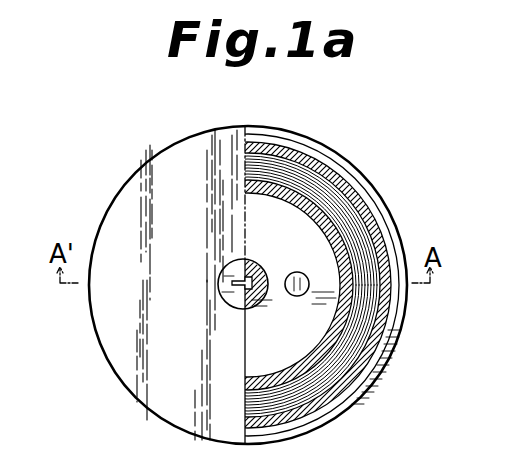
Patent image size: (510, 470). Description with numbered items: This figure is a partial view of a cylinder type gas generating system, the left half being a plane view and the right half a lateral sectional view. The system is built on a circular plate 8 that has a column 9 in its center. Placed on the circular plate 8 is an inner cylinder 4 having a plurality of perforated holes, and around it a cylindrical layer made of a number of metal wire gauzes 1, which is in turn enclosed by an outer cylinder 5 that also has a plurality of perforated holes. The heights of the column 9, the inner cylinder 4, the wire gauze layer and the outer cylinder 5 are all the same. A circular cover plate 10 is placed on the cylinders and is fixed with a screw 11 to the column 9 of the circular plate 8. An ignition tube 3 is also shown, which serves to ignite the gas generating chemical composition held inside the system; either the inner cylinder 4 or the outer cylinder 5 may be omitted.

The metal wire gauzes 1 is at (303, 277).
The ignition tube 3 is at (367, 245).
The inner cylinder 4 is at (350, 315).
The outer cylinder 5 is at (365, 360).
The circular plate 8 is at (345, 407).
The column 9 is at (270, 273).
The circular cover plate 10 is at (118, 358).
The screw 11 is at (225, 216).